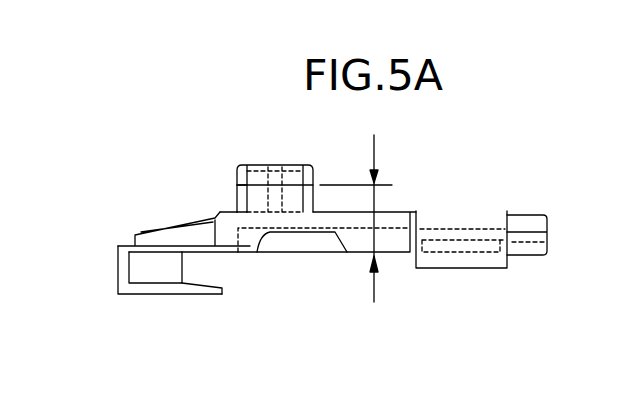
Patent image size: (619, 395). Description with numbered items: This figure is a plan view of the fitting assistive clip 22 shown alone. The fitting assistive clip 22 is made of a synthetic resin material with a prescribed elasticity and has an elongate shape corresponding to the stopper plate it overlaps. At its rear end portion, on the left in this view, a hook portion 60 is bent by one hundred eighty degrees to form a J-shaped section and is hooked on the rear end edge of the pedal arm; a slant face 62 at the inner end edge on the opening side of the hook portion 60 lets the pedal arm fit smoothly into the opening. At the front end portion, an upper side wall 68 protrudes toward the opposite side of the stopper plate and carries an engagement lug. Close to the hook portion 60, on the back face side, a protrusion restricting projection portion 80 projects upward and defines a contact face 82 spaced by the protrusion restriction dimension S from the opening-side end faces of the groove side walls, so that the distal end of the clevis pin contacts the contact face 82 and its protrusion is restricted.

The fitting assistive clip 22 is at (499, 166).
The hook portion 60 is at (116, 267).
The slant face 62 is at (200, 283).
The upper side wall 68 is at (458, 242).
The protrusion restricting projection portion 80 is at (288, 180).
The contact face 82 is at (236, 188).